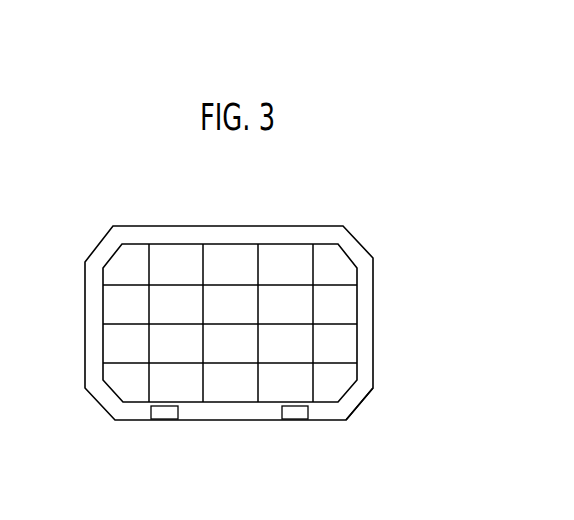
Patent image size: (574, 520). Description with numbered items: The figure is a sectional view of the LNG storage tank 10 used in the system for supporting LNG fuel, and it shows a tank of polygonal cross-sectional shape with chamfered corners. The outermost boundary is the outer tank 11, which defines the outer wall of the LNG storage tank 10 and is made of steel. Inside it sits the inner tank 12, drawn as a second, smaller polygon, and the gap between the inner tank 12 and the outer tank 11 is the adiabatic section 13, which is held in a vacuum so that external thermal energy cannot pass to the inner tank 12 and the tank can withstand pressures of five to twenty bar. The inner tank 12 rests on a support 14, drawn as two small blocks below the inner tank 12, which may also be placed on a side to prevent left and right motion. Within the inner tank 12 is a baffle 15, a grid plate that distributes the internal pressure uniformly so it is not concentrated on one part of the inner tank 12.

The LNG storage tank 10 is at (260, 319).
The outer tank 11 is at (368, 252).
The inner tank 12 is at (357, 308).
The adiabatic section 13 is at (366, 399).
The support 14 is at (295, 412).
The baffle 15 is at (135, 363).